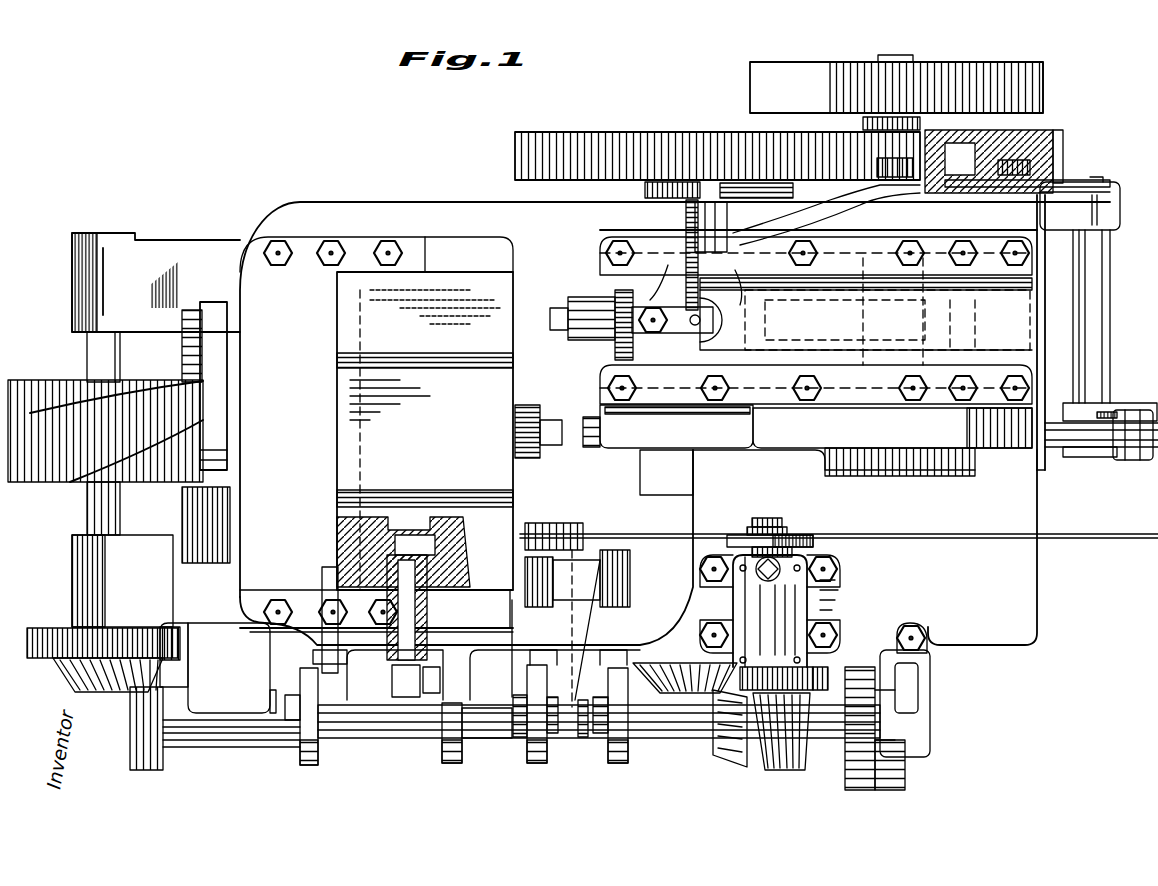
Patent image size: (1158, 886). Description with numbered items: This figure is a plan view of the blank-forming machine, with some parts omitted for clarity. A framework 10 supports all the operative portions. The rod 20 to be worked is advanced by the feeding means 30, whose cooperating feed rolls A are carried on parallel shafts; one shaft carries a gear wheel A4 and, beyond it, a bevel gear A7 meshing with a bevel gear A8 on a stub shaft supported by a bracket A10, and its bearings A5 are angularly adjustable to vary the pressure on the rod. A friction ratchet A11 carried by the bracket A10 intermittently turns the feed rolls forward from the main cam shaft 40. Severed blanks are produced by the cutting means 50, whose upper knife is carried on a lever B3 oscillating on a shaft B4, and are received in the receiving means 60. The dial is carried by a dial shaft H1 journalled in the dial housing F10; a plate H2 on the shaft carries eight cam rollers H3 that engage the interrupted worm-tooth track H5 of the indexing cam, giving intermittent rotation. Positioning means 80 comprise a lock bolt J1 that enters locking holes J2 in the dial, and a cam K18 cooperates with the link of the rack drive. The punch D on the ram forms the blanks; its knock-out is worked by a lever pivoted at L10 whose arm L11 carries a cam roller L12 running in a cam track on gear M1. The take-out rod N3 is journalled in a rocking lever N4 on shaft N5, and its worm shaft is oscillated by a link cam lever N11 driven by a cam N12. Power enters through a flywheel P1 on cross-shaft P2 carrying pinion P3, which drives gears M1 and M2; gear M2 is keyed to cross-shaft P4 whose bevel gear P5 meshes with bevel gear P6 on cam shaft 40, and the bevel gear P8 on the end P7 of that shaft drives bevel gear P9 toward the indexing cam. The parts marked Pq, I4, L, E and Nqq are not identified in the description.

The framework 10 is at (995, 466).
The rod 20 is at (1061, 537).
The feeding means 30 is at (820, 533).
The main cam shaft 40 is at (410, 718).
The cutting means 50 is at (598, 520).
The receiving means 60 is at (356, 285).
The positioning means 80 is at (378, 676).
The dial shaft H1 is at (232, 405).
The plate H2 is at (213, 302).
The cam rollers H3 is at (190, 345).
The track H5 is at (30, 420).
The pinion P3 is at (113, 507).
The gear P'' Pq is at (45, 630).
The bevel gear P9 is at (105, 693).
The bevel gear P8 is at (137, 758).
The dial housing F10 is at (400, 305).
The locking holes J2 is at (410, 525).
The lock bolt J1 is at (412, 612).
The gear M2 is at (578, 142).
The cross-shaft P4 is at (655, 190).
The cam N12 is at (760, 150).
The pivot L10 is at (710, 175).
The arm L11 is at (835, 195).
The cam roller L12 is at (890, 165).
The flywheel P1 is at (990, 70).
The cross-shaft P2 is at (905, 57).
The gear M1 is at (1057, 148).
The link cam lever N11 is at (1035, 187).
The rod N'' Nqq is at (1080, 202).
The shaft N5 is at (1100, 388).
The oscillating rod N3 is at (1085, 432).
The rocking lever N4 is at (1140, 458).
The punch D is at (562, 354).
The flange I4 is at (637, 320).
The lever L is at (668, 265).
The screw E is at (588, 405).
The shaft B4 is at (625, 575).
The lever B3 is at (575, 630).
The feed rolls A is at (730, 542).
The bearings A5 is at (820, 600).
The gear wheel A4 is at (818, 674).
The bracket A10 is at (905, 630).
The bevel gear A7 is at (770, 700).
The bevel gear A8 is at (797, 705).
The friction ratchet A11 is at (870, 798).
The bevel gear P5 is at (662, 695).
The bevel gear P6 is at (722, 755).
The end of shaft P7 is at (462, 730).
The cam K18 is at (312, 765).